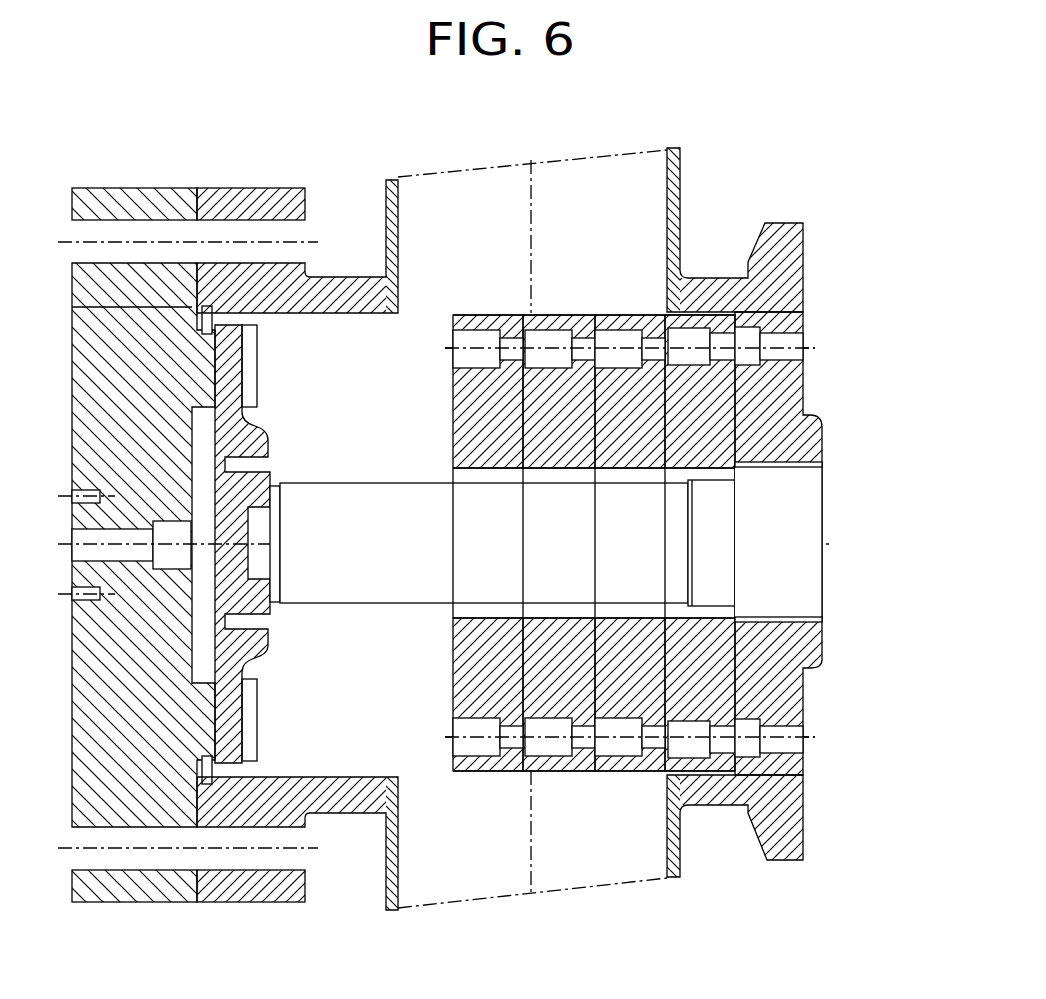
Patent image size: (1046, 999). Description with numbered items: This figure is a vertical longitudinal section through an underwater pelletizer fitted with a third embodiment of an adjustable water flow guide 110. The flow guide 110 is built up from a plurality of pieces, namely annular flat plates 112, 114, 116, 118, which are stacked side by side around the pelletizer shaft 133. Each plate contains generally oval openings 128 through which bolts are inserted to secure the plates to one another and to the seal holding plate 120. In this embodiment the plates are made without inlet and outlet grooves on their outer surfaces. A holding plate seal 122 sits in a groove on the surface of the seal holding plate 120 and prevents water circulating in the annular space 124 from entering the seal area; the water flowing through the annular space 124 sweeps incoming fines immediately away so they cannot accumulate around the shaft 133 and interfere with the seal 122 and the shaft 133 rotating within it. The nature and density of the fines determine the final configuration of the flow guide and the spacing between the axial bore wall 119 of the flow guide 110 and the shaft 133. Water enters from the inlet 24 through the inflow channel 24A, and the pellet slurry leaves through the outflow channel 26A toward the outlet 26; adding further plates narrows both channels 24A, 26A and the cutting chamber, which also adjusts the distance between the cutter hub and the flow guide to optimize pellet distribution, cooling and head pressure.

The inlet 24 is at (560, 893).
The inflow channel 24A is at (428, 768).
The outlet 26 is at (565, 172).
The outflow channel 26A is at (425, 322).
The water flow guide 110 is at (638, 780).
The annular flat plate 112 is at (698, 318).
The annular flat plate 114 is at (632, 313).
The annular flat plate 116 is at (568, 313).
The annular flat plate 118 is at (470, 315).
The axial bore wall 119 is at (497, 618).
The seal holding plate 120 is at (790, 400).
The holding plate seal 122 is at (822, 464).
The annular space 124 is at (632, 605).
The oval openings 128 is at (490, 333).
The shaft end 133 is at (648, 512).